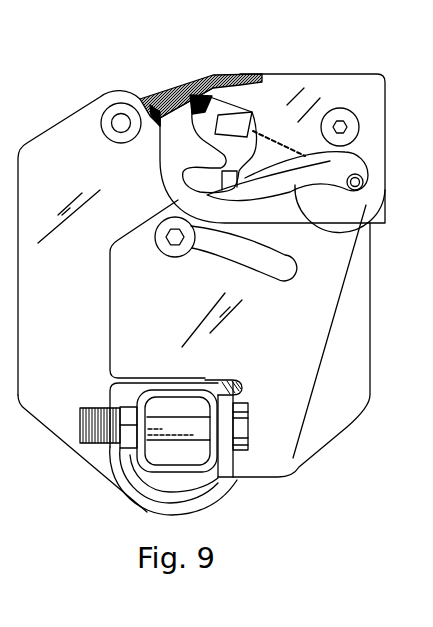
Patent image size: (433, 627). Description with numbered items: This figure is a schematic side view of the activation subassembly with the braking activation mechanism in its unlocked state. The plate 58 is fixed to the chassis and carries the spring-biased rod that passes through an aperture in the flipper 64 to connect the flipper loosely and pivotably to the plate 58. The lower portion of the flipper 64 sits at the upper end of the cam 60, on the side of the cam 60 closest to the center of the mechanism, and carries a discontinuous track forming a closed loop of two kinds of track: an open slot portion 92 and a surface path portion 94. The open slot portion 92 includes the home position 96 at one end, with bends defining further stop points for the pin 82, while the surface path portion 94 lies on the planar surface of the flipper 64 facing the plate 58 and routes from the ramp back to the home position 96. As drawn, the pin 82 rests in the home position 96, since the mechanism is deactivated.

The plate 58 is at (83, 130).
The cam 60 is at (295, 388).
The flipper 64 is at (338, 85).
The pin 82 is at (362, 180).
The open slot portion 92 is at (320, 217).
The surface path portion 94 is at (265, 136).
The home position 96 is at (366, 196).